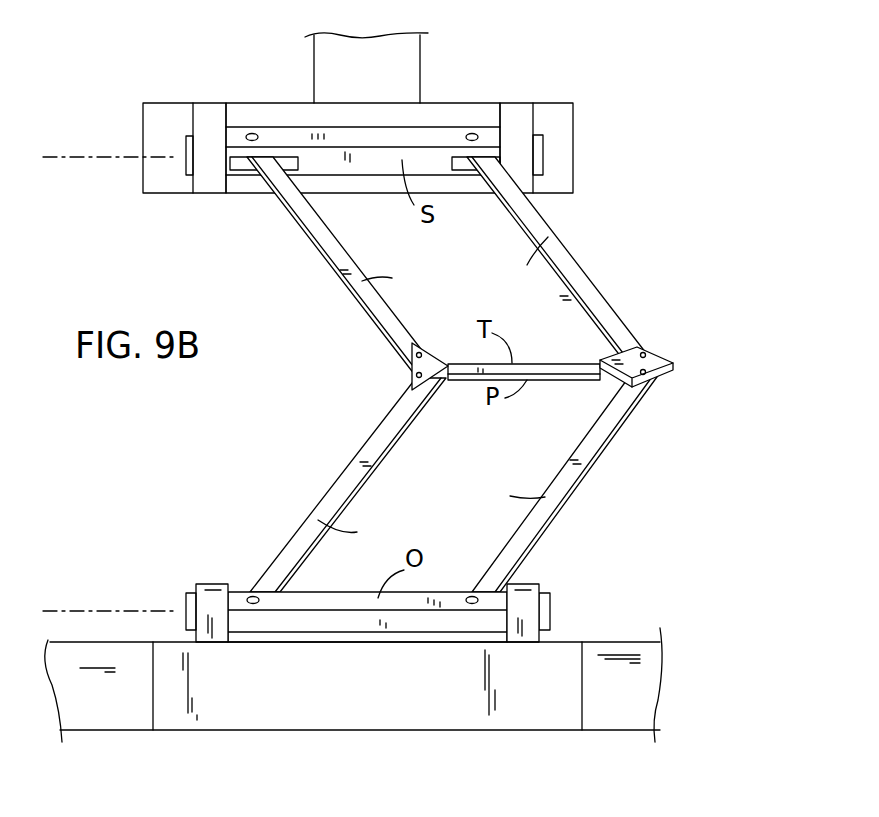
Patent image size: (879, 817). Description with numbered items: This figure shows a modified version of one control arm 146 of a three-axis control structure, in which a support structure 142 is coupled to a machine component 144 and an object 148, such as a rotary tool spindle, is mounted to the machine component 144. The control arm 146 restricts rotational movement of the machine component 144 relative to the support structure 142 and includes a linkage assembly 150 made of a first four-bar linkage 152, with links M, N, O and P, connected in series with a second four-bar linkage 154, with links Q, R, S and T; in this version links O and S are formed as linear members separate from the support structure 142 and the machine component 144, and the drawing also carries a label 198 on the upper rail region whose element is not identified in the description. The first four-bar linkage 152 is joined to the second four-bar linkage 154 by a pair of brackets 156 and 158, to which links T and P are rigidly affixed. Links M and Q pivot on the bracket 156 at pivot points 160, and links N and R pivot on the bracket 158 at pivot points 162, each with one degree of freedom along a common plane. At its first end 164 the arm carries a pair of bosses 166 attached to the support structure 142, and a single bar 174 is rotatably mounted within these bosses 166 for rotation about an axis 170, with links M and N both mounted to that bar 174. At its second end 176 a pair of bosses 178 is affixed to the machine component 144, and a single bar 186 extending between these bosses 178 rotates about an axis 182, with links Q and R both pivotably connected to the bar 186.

The support structure 142 is at (415, 712).
The machine component 144 is at (385, 114).
The control arm 146 is at (511, 264).
The object 148 is at (313, 77).
The linkage assembly 150 is at (487, 482).
The first four-bar linkage 152 is at (604, 492).
The second four-bar linkage 154 is at (614, 265).
The bracket 156 is at (687, 359).
The bracket 158 is at (392, 392).
The pivot point 160 is at (644, 352).
The pivot point 162 is at (399, 361).
The first end 164 is at (574, 606).
The boss 166 is at (210, 600).
The axis 170 is at (103, 610).
The single bar 174 is at (243, 597).
The second end 176 is at (564, 149).
The boss 178 is at (204, 112).
The axis 182 is at (108, 152).
The single bar 186 is at (347, 160).
The upper rail 198 is at (297, 137).